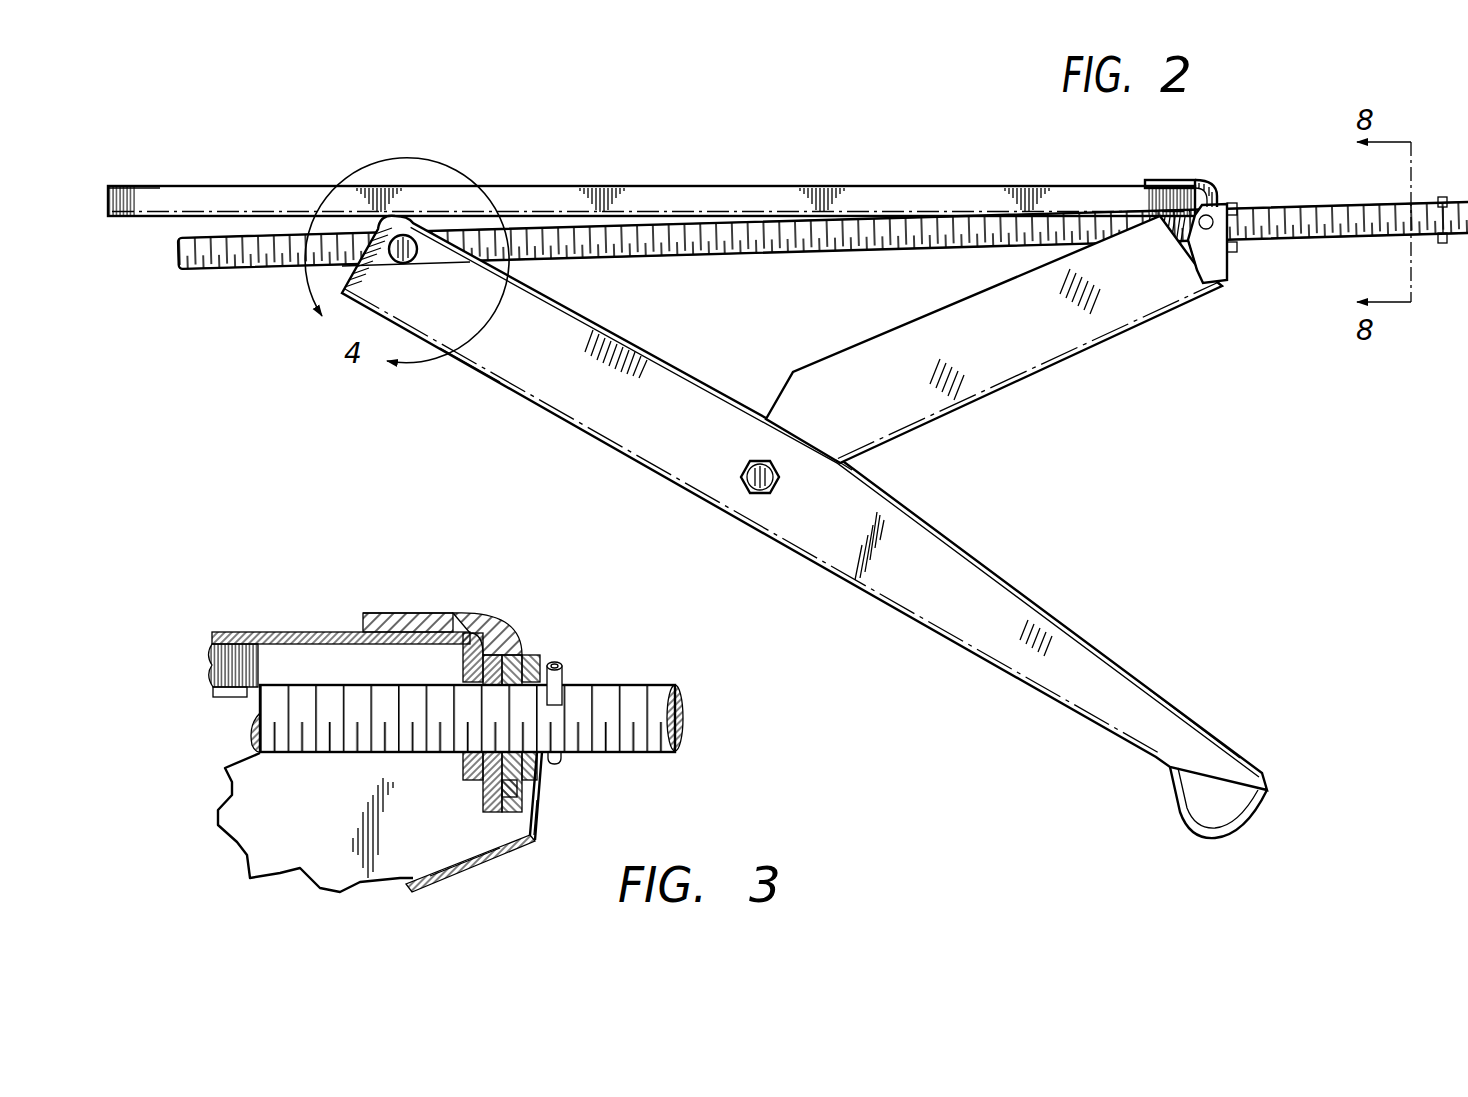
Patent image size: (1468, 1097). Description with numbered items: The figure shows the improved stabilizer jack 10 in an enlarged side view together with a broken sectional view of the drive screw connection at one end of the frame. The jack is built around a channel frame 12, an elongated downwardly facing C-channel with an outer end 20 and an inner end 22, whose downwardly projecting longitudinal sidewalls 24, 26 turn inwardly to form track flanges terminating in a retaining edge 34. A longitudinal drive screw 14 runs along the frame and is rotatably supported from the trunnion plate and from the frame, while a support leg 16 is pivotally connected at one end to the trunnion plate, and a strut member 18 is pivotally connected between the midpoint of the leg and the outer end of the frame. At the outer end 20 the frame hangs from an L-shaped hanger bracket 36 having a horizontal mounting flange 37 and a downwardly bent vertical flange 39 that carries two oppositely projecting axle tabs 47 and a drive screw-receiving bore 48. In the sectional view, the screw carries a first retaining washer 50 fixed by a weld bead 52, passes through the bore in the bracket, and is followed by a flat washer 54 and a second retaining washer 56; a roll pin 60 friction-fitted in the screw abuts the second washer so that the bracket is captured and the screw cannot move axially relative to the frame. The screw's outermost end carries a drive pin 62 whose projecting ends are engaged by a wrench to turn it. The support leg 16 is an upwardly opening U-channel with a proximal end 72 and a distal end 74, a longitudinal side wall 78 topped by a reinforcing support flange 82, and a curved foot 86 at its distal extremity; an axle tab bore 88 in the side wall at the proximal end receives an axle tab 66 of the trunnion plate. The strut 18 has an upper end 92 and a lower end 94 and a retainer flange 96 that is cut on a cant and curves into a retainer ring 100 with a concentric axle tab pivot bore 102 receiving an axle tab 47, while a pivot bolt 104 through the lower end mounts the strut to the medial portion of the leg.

In FIG. 2, the stabilizer jack 10 is at (700, 148).
In FIG. 2, the channel frame 12 is at (862, 182).
In FIG. 3, the channel frame 12 is at (237, 630).
In FIG. 2, the drive screw 14 is at (686, 262).
In FIG. 3, the drive screw 14 is at (641, 750).
In FIG. 2, the support leg 16 is at (687, 489).
In FIG. 2, the strut member 18 is at (1054, 370).
In FIG. 3, the strut member 18 is at (436, 887).
In FIG. 2, the outer end 20 is at (1118, 185).
In FIG. 3, the outer end 20 is at (343, 632).
In FIG. 2, the inner end 22 is at (150, 183).
In FIG. 2, the longitudinal sidewall 24 is at (512, 192).
In FIG. 3, the longitudinal sidewall 26 is at (215, 670).
In FIG. 3, the retaining edge 34 is at (222, 700).
In FIG. 2, the hanger bracket 36 is at (1210, 180).
In FIG. 3, the hanger bracket 36 is at (492, 614).
In FIG. 2, the horizontal mounting flange 37 is at (1158, 180).
In FIG. 3, the horizontal mounting flange 37 is at (425, 613).
In FIG. 3, the vertical flange 39 is at (533, 834).
In FIG. 2, the axle tab 47 is at (1225, 205).
In FIG. 3, the drive screw-receiving bore 48 is at (531, 680).
In FIG. 3, the first retaining washer 50 is at (477, 780).
In FIG. 3, the weld bead 52 is at (457, 757).
In FIG. 3, the flat washer 54 is at (540, 812).
In FIG. 3, the second retaining washer 56 is at (542, 790).
In FIG. 3, the roll pin 60 is at (565, 668).
In FIG. 2, the drive pin 62 is at (1443, 195).
In FIG. 2, the axle tab 66 is at (437, 227).
In FIG. 2, the proximal end 72 is at (474, 375).
In FIG. 2, the distal end 74 is at (1205, 720).
In FIG. 3, the distal end 74 is at (220, 817).
In FIG. 2, the longitudinal side wall 78 is at (558, 340).
In FIG. 2, the reinforcing support flange 82 is at (1050, 617).
In FIG. 2, the curved foot 86 is at (1180, 810).
In FIG. 2, the axle tab bore 88 is at (362, 224).
In FIG. 2, the upper end 92 is at (1220, 292).
In FIG. 2, the lower end 94 is at (872, 459).
In FIG. 2, the retainer flange 96 is at (993, 351).
In FIG. 2, the retainer ring 100 is at (1236, 265).
In FIG. 2, the axle tab pivot bore 102 is at (1194, 262).
In FIG. 2, the pivot bolt 104 is at (760, 497).